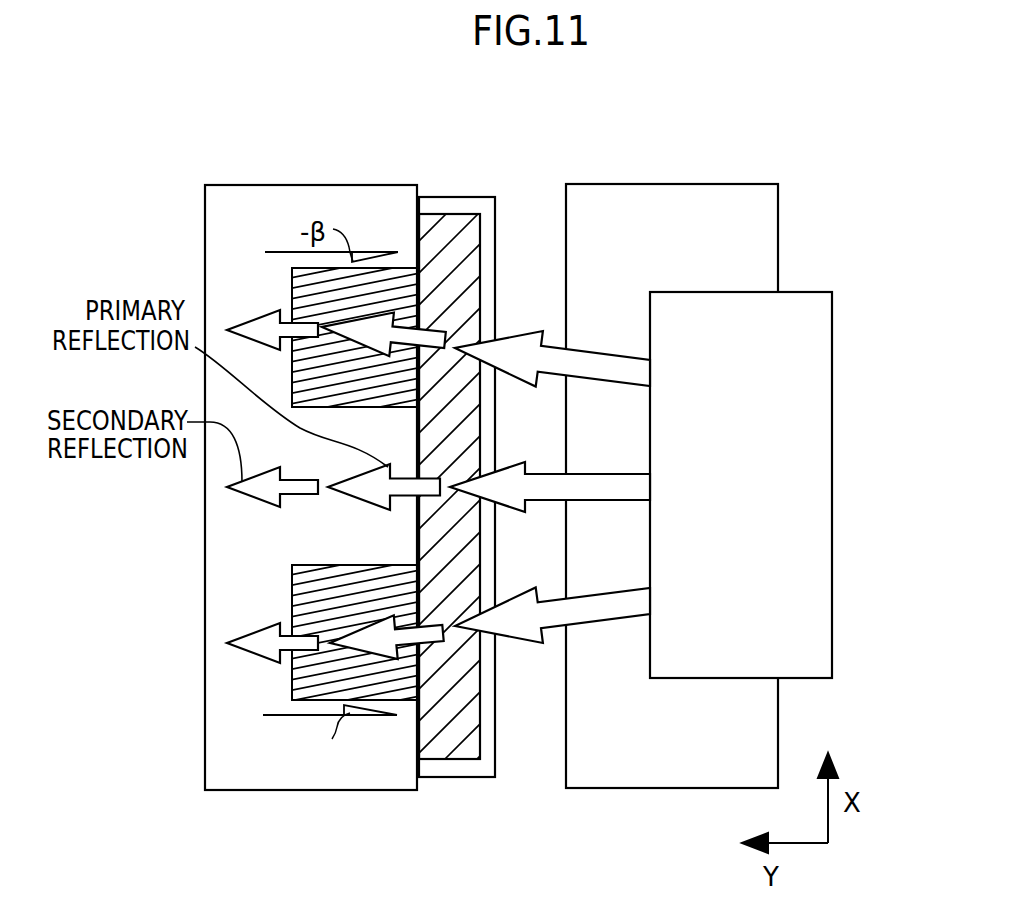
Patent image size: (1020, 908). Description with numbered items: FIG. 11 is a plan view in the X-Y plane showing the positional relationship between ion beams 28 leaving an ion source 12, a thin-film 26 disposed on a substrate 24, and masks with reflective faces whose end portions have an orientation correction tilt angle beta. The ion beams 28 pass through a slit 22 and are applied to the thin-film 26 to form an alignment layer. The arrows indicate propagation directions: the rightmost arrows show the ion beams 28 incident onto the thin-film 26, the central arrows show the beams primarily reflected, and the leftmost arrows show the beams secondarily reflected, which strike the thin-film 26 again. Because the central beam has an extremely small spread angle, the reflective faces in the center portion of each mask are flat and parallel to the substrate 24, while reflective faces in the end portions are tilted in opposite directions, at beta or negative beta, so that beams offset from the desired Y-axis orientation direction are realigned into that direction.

The ion source 12 is at (833, 490).
The slit 22 is at (524, 764).
The substrate 24 is at (453, 768).
The thin-film 26 is at (452, 218).
The ion beams 28 is at (599, 354).